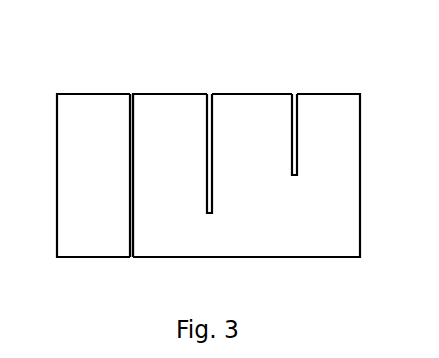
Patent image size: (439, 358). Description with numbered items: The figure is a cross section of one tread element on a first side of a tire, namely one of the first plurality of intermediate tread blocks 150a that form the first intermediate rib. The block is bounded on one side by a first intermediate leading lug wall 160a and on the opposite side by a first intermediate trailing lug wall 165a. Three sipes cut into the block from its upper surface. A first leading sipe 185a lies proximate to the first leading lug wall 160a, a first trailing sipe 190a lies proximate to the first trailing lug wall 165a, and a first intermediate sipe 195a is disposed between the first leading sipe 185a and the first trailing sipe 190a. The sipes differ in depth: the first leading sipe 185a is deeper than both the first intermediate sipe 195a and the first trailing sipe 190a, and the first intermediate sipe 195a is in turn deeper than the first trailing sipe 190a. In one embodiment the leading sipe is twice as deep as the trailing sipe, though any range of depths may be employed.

The first intermediate tread block 150a is at (303, 231).
The first intermediate leading lug wall 160a is at (57, 121).
The first intermediate trailing lug wall 165a is at (271, 147).
The first leading sipe 185a is at (133, 92).
The first trailing sipe 190a is at (296, 92).
The first intermediate sipe 195a is at (213, 92).